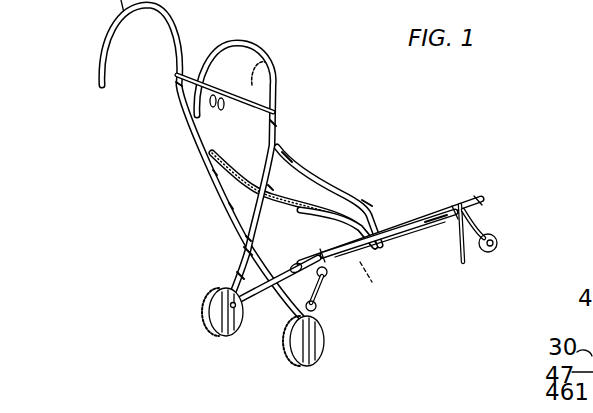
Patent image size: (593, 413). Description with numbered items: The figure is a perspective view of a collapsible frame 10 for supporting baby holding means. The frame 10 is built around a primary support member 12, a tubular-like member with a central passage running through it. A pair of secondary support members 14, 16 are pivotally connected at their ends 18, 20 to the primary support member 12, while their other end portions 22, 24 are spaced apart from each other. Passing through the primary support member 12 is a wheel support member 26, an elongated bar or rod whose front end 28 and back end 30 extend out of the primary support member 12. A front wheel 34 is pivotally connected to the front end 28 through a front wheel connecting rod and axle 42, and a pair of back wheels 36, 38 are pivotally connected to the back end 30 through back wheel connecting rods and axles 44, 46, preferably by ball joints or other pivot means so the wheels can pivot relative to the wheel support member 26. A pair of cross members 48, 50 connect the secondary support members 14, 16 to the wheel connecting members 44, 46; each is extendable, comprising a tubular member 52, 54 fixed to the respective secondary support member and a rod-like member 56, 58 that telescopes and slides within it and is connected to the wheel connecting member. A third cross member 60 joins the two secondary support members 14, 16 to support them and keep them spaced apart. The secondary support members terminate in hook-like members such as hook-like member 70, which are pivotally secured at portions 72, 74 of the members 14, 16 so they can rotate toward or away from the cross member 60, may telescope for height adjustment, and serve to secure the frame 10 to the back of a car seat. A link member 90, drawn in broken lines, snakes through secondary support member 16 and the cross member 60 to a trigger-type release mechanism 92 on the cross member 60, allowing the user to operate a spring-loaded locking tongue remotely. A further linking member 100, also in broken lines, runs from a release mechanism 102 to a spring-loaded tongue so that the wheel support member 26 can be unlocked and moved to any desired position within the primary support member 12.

The collapsible frame 10 is at (108, 111).
The primary support member 12 is at (428, 231).
The secondary support member 14 is at (231, 172).
The secondary support member 16 is at (344, 190).
The end of secondary support member 18 is at (343, 227).
The end of secondary support member 20 is at (360, 262).
The end portion of secondary support member 22 is at (177, 113).
The end portion of secondary support member 24 is at (291, 161).
The wheel support member 26 is at (466, 246).
The front end of wheel support member 28 is at (474, 201).
The back end of wheel support member 30 is at (314, 276).
The front wheel 34 is at (498, 252).
The back wheel 36 is at (205, 315).
The back wheel 38 is at (317, 348).
The front wheel connecting rod and axle 42 is at (497, 226).
The back wheel connecting rod and axle 44 is at (261, 291).
The back wheel connecting rod and axle 46 is at (317, 318).
The cross member 48 is at (230, 206).
The cross member 50 is at (249, 238).
The tubular member 52 is at (213, 172).
The tubular member 54 is at (270, 188).
The rod-like member 56 is at (247, 254).
The rod-like member 58 is at (240, 276).
The third cross member 60 is at (190, 72).
The hook-like member 70 is at (232, 44).
The pivot portion of secondary support member 72 is at (172, 78).
The pivot portion of secondary support member 74 is at (276, 124).
The link member 90 is at (275, 56).
The release mechanism 92 is at (224, 107).
The linking member 100 is at (375, 290).
The release mechanism 102 is at (330, 275).